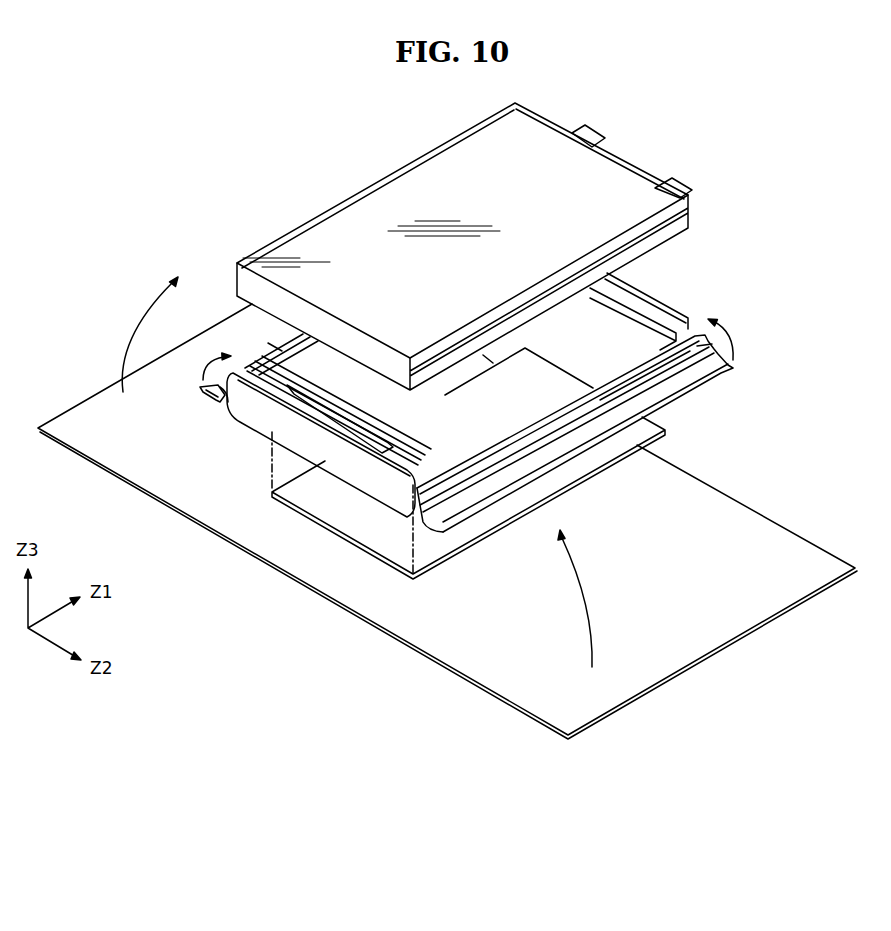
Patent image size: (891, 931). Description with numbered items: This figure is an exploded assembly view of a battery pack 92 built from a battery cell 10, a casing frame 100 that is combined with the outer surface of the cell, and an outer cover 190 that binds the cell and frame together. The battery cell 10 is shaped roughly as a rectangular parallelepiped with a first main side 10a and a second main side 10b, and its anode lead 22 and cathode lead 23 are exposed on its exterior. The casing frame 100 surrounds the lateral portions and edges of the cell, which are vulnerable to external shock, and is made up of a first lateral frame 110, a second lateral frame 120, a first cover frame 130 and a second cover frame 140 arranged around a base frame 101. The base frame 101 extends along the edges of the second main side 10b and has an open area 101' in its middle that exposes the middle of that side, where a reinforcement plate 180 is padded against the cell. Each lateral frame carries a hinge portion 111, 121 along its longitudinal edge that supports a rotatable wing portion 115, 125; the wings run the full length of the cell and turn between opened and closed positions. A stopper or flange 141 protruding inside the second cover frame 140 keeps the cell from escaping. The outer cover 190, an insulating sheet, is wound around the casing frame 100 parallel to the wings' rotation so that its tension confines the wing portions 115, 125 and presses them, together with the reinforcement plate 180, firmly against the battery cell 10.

The battery pack 92 is at (134, 212).
The battery cell 10 is at (310, 196).
The first main side 10a is at (392, 190).
The second main side 10b is at (247, 316).
The anode lead 22 is at (594, 131).
The cathode lead 23 is at (683, 181).
The casing frame 100 is at (758, 318).
The first cover frame 130 is at (648, 289).
The base frame 101 is at (657, 317).
The open area 101' is at (547, 429).
The first lateral frame 110 is at (200, 408).
The hinge portion 111 is at (228, 348).
The wing portion 115 is at (275, 345).
The second lateral frame 120 is at (745, 376).
The hinge portion 121 is at (668, 360).
The wing portion 125 is at (713, 366).
The second cover frame 140 is at (335, 465).
The stopper (flange) 141 is at (394, 435).
The reinforcement plate 180 is at (345, 545).
The outer cover 190 is at (408, 636).